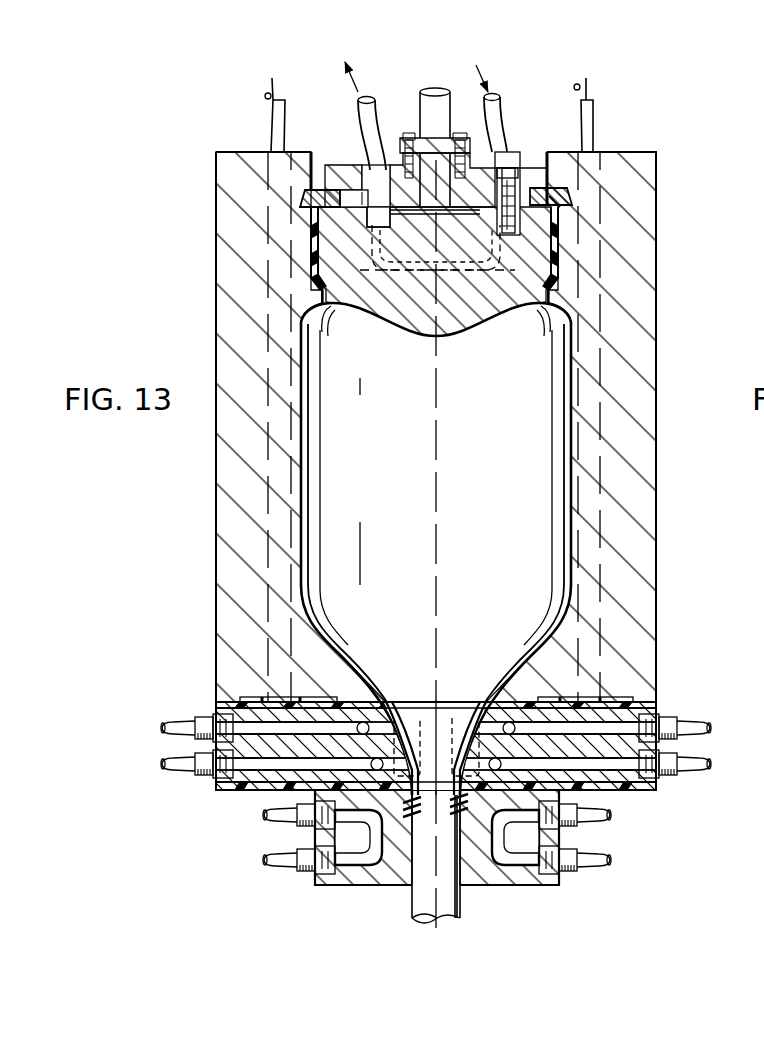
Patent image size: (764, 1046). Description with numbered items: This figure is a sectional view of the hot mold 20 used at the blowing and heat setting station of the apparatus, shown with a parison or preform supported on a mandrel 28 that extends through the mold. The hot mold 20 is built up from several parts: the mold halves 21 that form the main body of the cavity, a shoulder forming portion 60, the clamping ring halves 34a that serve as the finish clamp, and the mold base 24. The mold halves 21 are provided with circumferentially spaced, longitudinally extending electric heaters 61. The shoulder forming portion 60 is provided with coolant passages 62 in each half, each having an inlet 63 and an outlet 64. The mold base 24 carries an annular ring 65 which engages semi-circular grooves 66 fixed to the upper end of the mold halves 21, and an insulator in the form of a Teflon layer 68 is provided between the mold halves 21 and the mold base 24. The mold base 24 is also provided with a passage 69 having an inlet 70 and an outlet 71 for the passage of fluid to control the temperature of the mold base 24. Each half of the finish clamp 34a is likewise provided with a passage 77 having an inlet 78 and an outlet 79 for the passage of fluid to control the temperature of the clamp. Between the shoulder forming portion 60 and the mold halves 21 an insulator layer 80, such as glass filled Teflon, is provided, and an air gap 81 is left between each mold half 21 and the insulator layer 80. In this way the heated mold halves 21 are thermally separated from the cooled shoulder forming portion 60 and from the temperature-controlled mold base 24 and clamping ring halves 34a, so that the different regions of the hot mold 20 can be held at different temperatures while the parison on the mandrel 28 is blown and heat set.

The hot mold 20 is at (208, 255).
The mold halves 21 is at (248, 480).
The mold base 24 is at (345, 178).
The mandrel 28 is at (444, 910).
The clamping ring halves 34a is at (497, 877).
The shoulder forming portion 60 is at (218, 787).
The electric heaters 61 is at (276, 150).
The coolant passages 62 is at (248, 796).
The inlet 63 is at (160, 766).
The outlet 64 is at (160, 723).
The annular ring 65 is at (553, 188).
The semi-circular grooves 66 is at (562, 207).
The Teflon layer 68 is at (559, 251).
The passage 69 is at (472, 262).
The inlet 70 is at (507, 150).
The outlet 71 is at (382, 148).
The passage 77 is at (343, 865).
The inlet 78 is at (260, 862).
The outlet 79 is at (260, 817).
The insulator layer 80 is at (240, 702).
The air gap 81 is at (244, 695).